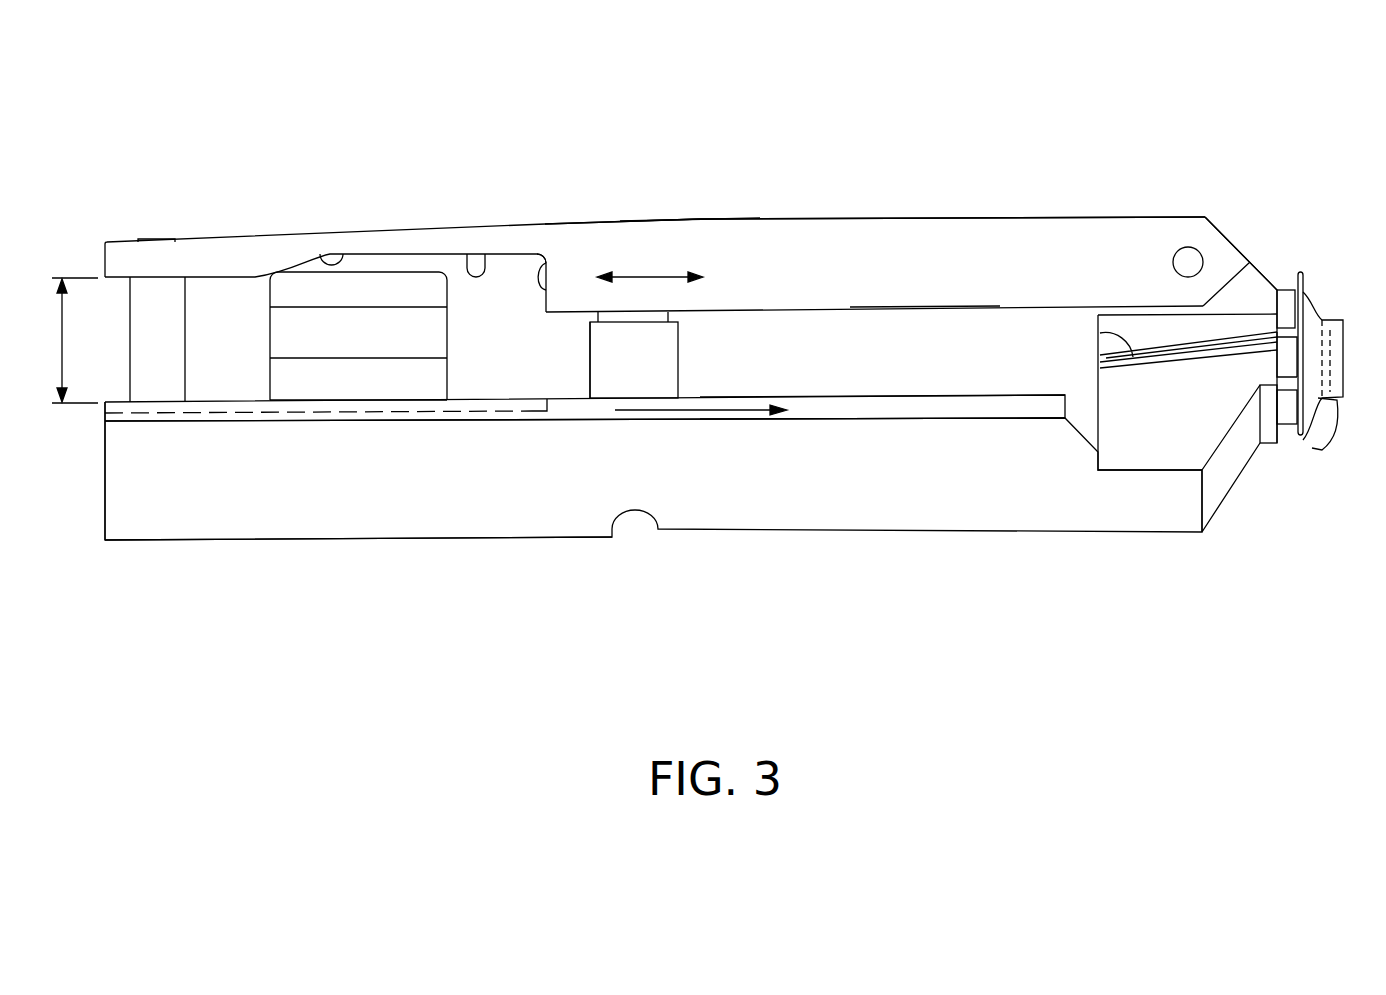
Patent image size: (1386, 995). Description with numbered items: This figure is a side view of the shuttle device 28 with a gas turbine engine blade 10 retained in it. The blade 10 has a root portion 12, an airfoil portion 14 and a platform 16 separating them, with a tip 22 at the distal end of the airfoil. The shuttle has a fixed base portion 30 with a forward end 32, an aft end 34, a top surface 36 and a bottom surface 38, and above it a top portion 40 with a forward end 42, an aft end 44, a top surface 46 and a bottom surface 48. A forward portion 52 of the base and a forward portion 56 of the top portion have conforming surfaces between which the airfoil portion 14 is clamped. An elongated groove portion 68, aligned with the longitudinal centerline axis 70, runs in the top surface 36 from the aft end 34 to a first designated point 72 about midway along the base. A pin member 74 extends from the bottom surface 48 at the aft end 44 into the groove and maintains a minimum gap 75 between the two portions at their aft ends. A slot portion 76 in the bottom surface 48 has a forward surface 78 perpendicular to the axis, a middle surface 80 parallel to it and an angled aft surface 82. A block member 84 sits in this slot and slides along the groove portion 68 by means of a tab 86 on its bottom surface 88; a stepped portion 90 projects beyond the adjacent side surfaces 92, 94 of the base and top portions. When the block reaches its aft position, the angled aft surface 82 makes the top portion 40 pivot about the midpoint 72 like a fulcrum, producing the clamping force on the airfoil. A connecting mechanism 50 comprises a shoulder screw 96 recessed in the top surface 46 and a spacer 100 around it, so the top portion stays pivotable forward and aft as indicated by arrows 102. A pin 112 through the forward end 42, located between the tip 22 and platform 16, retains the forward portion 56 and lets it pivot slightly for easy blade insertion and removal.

The blade 10 is at (1318, 285).
The root portion 12 is at (1330, 428).
The airfoil portion 14 is at (1132, 352).
The platform 16 is at (1325, 468).
The tip 22 is at (1118, 356).
The device 28 is at (838, 158).
The base portion 30 is at (490, 540).
The forward end 32 is at (1178, 532).
The aft end 34 is at (112, 542).
The top surface 36 is at (808, 396).
The bottom surface 38 is at (280, 540).
The top portion 40 is at (957, 215).
The forward end 42 is at (1217, 218).
The aft end 44 is at (120, 240).
The top surface 46 is at (683, 220).
The bottom surface 48 is at (893, 306).
The mechanism 50 is at (580, 375).
The forward portion 52 is at (1127, 465).
The forward portion 56 is at (1252, 270).
The groove portion 68 is at (515, 423).
The longitudinal centerline axis 70 is at (693, 412).
The first designated point 72 is at (633, 222).
The pin member 74 is at (170, 312).
The minimum gap 75 is at (68, 340).
The slot portion 76 is at (506, 264).
The forward surface 78 is at (547, 258).
The middle surface 80 is at (482, 262).
The aft surface 82 is at (343, 257).
The block member 84 is at (447, 330).
The tab 86 is at (292, 408).
The bottom surface 88 is at (325, 425).
The stepped portion 90 is at (292, 358).
The side surface 92 is at (865, 420).
The side surface 94 is at (790, 235).
The shoulder screw 96 is at (670, 313).
The spacer 100 is at (668, 358).
The arrows 102 is at (646, 277).
The pin 112 is at (1172, 262).